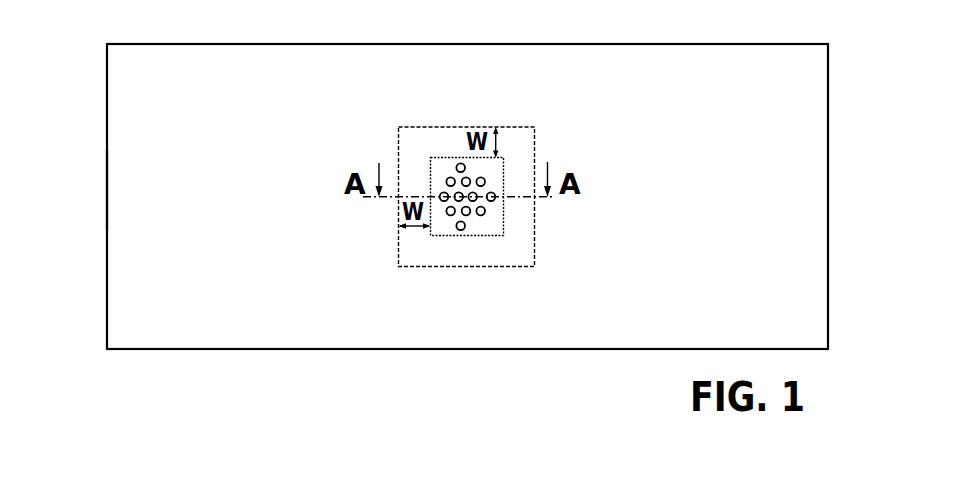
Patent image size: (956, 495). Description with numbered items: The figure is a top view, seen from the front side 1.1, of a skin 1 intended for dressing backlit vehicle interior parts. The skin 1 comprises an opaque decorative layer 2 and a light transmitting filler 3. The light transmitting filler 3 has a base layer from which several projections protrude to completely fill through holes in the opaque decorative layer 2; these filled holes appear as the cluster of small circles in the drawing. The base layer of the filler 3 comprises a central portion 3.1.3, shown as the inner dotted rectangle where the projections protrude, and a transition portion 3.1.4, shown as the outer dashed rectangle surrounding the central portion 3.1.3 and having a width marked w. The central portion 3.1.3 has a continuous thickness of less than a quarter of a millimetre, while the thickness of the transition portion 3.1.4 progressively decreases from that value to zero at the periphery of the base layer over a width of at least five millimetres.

The skin 1 is at (199, 371).
The front side 1.1 is at (122, 195).
The opaque decorative layer 2 is at (510, 337).
The light transmitting filler 3 is at (449, 178).
The central portion 3.1.3 is at (496, 222).
The transition portion 3.1.4 is at (432, 252).